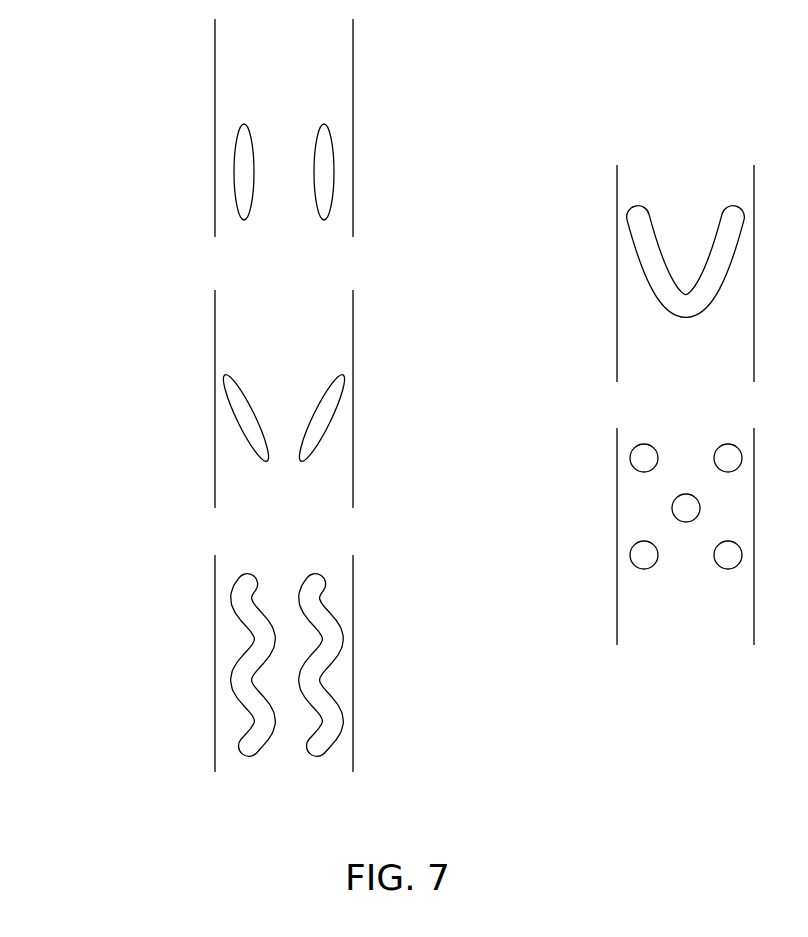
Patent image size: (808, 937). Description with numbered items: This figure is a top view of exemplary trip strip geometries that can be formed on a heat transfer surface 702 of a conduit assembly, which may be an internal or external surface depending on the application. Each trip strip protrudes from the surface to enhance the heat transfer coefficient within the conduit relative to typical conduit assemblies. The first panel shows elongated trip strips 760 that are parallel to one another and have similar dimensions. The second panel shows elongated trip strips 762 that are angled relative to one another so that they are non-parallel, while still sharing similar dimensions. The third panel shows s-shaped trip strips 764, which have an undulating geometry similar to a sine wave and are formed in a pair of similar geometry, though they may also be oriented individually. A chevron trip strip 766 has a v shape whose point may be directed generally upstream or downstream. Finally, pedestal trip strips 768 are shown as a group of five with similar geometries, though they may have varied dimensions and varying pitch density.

The heat transfer surface 702 is at (298, 98).
The elongated trip strip 760 is at (203, 134).
The elongated trip strip 762 is at (210, 385).
The s-shaped trip strip 764 is at (203, 657).
The chevron trip strip 766 is at (595, 230).
The pedestal trip strip 768 is at (599, 506).